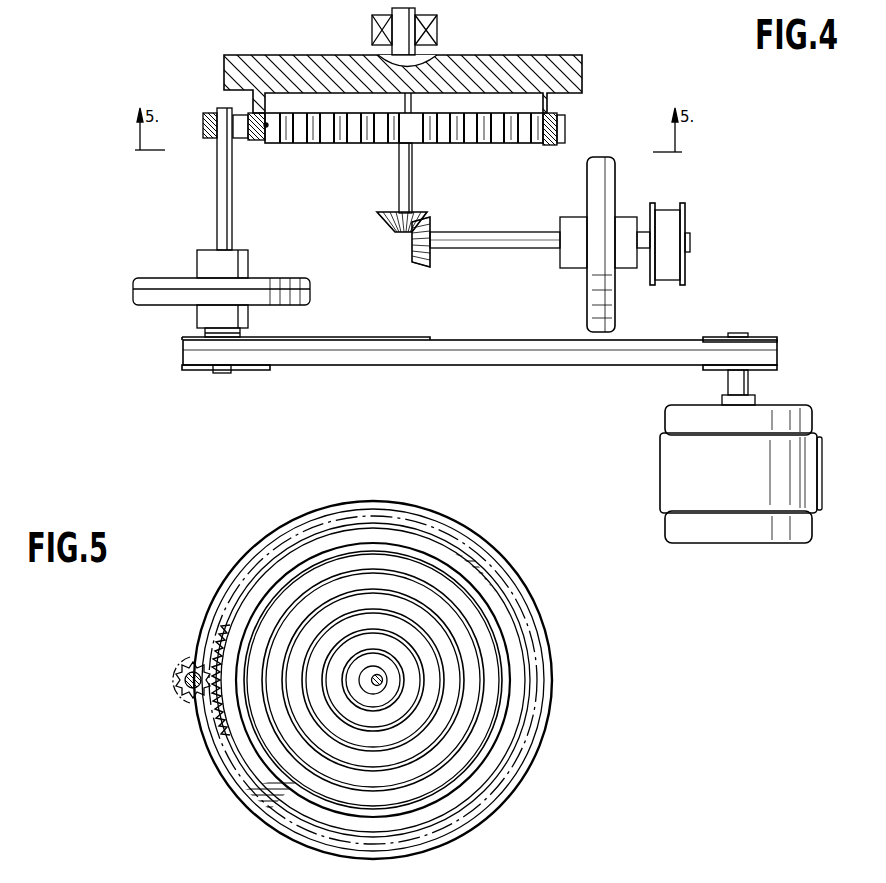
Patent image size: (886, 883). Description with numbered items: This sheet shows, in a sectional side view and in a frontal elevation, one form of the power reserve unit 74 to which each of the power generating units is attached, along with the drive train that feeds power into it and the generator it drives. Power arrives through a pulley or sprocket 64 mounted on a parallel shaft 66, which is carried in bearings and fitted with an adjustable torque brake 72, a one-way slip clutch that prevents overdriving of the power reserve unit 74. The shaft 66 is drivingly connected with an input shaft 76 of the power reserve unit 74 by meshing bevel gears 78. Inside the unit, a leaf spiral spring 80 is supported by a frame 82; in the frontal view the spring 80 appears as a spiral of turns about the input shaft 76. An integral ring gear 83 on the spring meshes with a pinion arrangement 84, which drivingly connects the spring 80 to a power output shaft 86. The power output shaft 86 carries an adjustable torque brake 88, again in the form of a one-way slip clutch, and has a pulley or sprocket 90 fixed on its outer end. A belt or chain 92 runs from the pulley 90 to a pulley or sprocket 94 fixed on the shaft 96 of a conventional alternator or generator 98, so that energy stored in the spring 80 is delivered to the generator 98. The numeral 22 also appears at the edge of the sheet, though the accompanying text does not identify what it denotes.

In FIG. 5, the web strip 22 is at (647, 864).
In FIG. 4, the pulley or sprocket 64 is at (688, 222).
In FIG. 4, the parallel shaft 66 is at (510, 250).
In FIG. 4, the adjustable torque brake 72 is at (590, 182).
In FIG. 4, the power reserve unit 74 is at (562, 70).
In FIG. 5, the power reserve unit 74 is at (527, 593).
In FIG. 4, the input shaft 76 is at (412, 172).
In FIG. 5, the input shaft 76 is at (366, 680).
In FIG. 4, the bevel gears 78 is at (400, 238).
In FIG. 4, the leaf spiral spring 80 is at (363, 145).
In FIG. 5, the leaf spiral spring 80 is at (460, 588).
In FIG. 4, the frame 82 is at (533, 60).
In FIG. 4, the integral ring gear 83 is at (568, 127).
In FIG. 5, the integral ring gear 83 is at (215, 628).
In FIG. 4, the pinion arrangement 84 is at (203, 113).
In FIG. 5, the pinion arrangement 84 is at (192, 664).
In FIG. 4, the power output shaft 86 is at (218, 217).
In FIG. 5, the power output shaft 86 is at (183, 692).
In FIG. 4, the adjustable torque brake 88 is at (155, 297).
In FIG. 4, the pulley or sprocket 90 is at (200, 373).
In FIG. 4, the belt or chain 92 is at (375, 358).
In FIG. 4, the pulley or sprocket 94 is at (755, 337).
In FIG. 4, the shaft 96 is at (748, 380).
In FIG. 4, the alternator or generator 98 is at (740, 479).